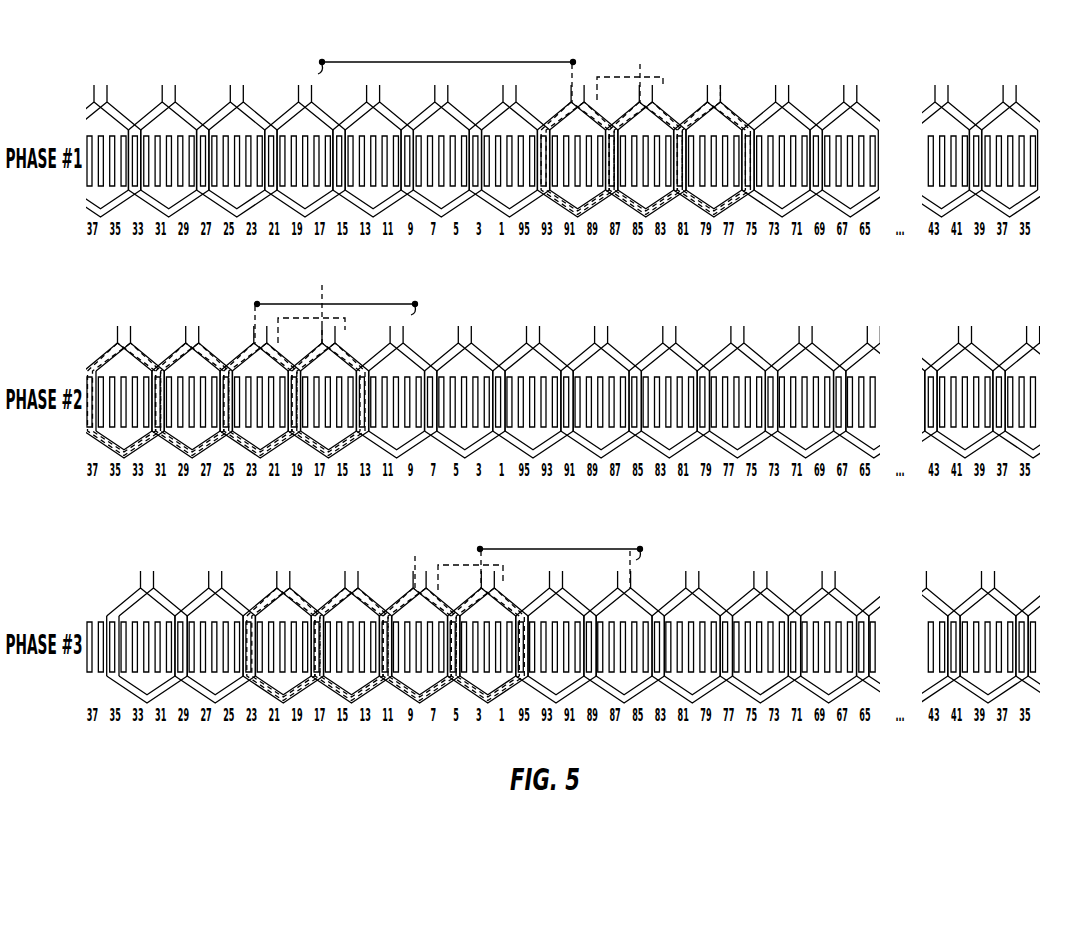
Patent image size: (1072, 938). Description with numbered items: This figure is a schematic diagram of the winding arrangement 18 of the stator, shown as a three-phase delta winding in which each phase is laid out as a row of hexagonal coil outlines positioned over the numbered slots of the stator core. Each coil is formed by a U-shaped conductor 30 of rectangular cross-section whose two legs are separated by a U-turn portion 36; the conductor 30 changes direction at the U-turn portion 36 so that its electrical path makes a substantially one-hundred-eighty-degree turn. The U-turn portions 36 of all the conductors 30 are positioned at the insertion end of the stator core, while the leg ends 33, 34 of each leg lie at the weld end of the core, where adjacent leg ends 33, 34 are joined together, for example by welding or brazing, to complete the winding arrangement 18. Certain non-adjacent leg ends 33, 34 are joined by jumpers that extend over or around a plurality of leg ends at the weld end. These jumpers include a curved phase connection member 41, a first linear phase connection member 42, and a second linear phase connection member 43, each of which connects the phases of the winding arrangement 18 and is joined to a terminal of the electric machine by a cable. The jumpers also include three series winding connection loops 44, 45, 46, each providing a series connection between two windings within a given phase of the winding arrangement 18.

The winding arrangement 18 is at (87, 55).
The U-shaped conductor 30 is at (189, 104).
The leg end 33 is at (119, 103).
The leg end 34 is at (217, 107).
The U-turn portion 36 is at (119, 207).
The curved phase connection member 41 is at (436, 60).
The first linear phase connection member 42 is at (576, 548).
The second linear phase connection member 43 is at (348, 303).
The series winding connection loop 44 is at (624, 73).
The series winding connection loop 45 is at (316, 323).
The series winding connection loop 46 is at (463, 565).